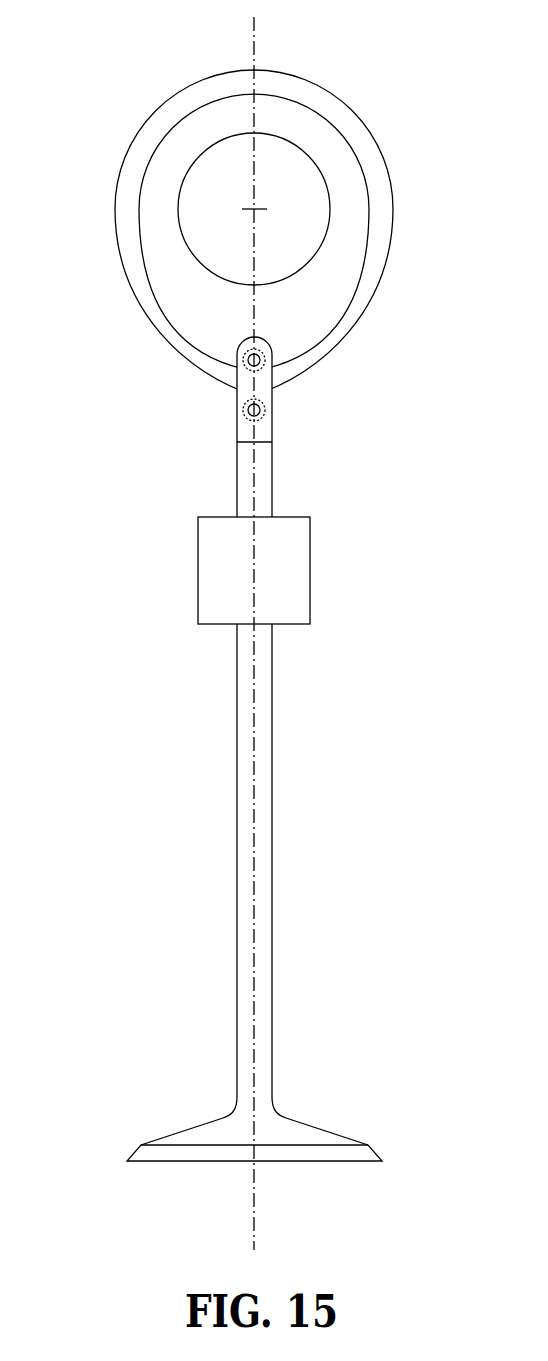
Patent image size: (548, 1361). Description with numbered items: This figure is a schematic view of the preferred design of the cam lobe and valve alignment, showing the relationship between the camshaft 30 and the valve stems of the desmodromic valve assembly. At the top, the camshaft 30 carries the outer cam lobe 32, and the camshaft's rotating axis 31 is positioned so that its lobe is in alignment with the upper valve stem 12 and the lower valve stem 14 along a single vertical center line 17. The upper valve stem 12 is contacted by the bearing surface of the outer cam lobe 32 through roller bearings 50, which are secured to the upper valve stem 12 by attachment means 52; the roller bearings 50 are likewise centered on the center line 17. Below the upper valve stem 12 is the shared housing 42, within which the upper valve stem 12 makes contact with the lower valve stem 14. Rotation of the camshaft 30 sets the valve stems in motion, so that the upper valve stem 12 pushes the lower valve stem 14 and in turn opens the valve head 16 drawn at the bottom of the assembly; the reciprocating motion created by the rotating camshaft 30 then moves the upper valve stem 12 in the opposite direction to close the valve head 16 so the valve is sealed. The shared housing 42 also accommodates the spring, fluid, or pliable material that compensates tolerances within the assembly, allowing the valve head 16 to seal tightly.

The upper valve stem 12 is at (237, 473).
The lower valve stem 14 is at (271, 768).
The valve head 16 is at (302, 1122).
The center line 17 is at (252, 41).
The camshaft 30 is at (120, 157).
The rotating axis 31 is at (254, 212).
The outer cam lobe 32 is at (397, 196).
The shared housing 42 is at (317, 573).
The roller bearings 50 is at (243, 362).
The attachment means 52 is at (260, 410).